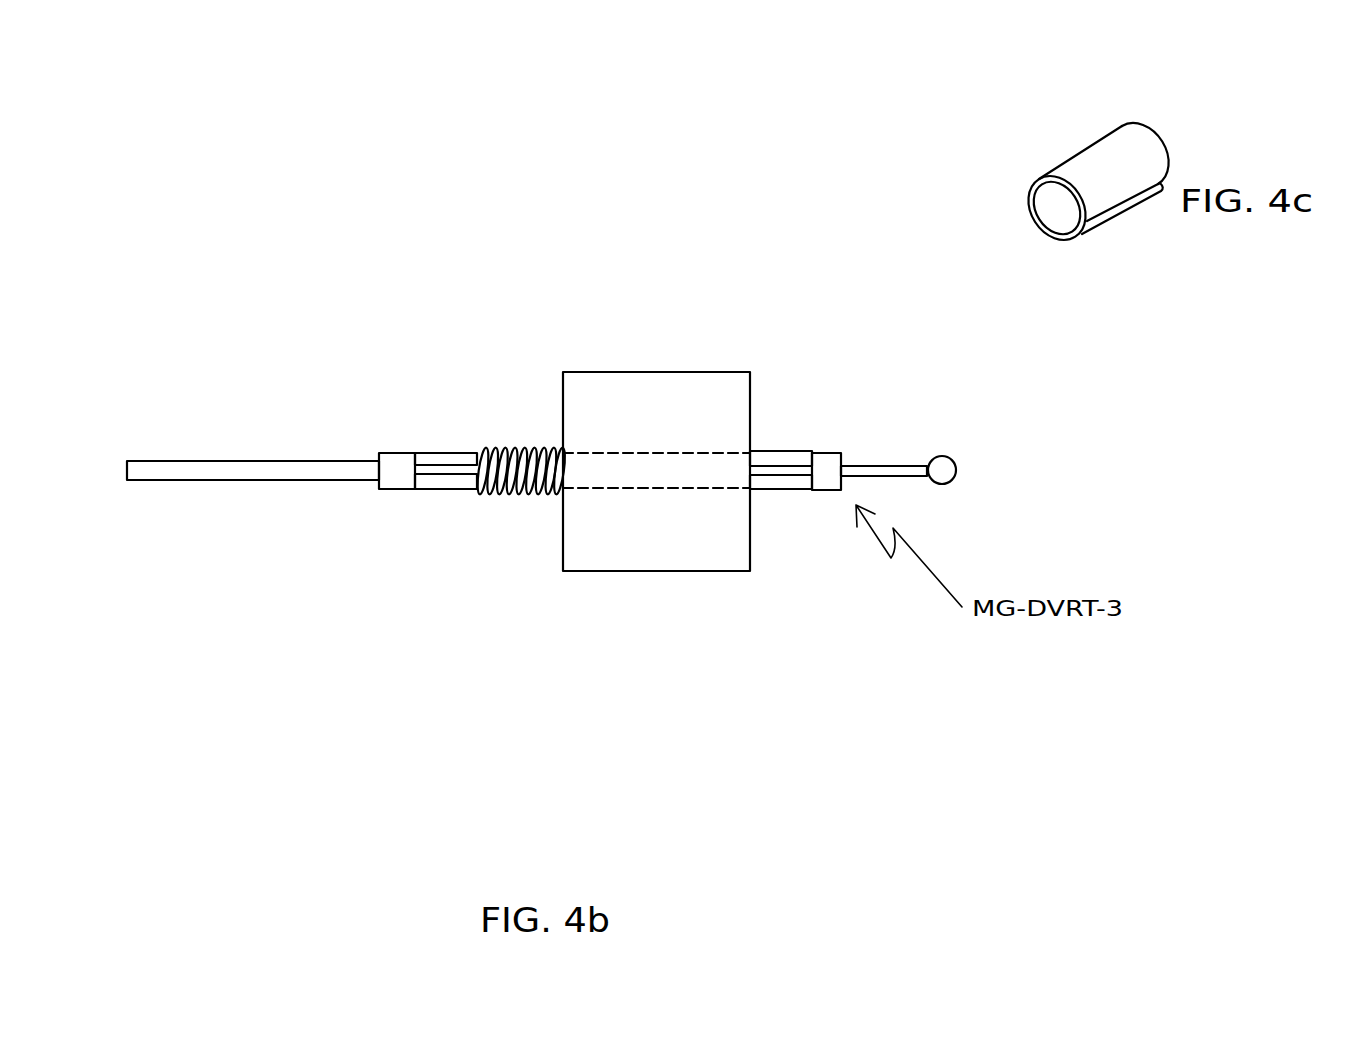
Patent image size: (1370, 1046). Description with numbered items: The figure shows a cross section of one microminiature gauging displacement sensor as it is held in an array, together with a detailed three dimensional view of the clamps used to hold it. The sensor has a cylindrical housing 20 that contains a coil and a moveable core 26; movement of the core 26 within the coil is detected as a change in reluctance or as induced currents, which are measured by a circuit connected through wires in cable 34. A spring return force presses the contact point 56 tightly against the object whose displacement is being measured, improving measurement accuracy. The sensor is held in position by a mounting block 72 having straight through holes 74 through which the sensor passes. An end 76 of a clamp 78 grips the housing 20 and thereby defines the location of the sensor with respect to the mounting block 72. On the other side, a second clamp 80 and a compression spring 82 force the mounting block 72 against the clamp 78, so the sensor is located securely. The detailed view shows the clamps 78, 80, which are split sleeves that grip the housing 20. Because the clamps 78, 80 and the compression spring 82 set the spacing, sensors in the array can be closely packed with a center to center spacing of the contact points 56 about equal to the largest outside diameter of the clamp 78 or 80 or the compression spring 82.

In FIG. 4b, the cylindrical housing 20 is at (399, 455).
In FIG. 4b, the moveable core 26 is at (887, 468).
In FIG. 4b, the cable 34 is at (248, 470).
In FIG. 4b, the contact point 56 is at (941, 465).
In FIG. 4b, the mounting block 72 is at (728, 406).
In FIG. 4b, the straight through holes 74 is at (617, 470).
In FIG. 4b, the end of clamp 76 is at (750, 461).
In FIG. 4b, the clamp 78 is at (777, 455).
In FIG. 4c, the clamp 78 is at (1039, 169).
In FIG. 4b, the clamp 80 is at (462, 453).
In FIG. 4c, the clamp 80 is at (1092, 160).
In FIG. 4b, the compression spring 82 is at (525, 417).